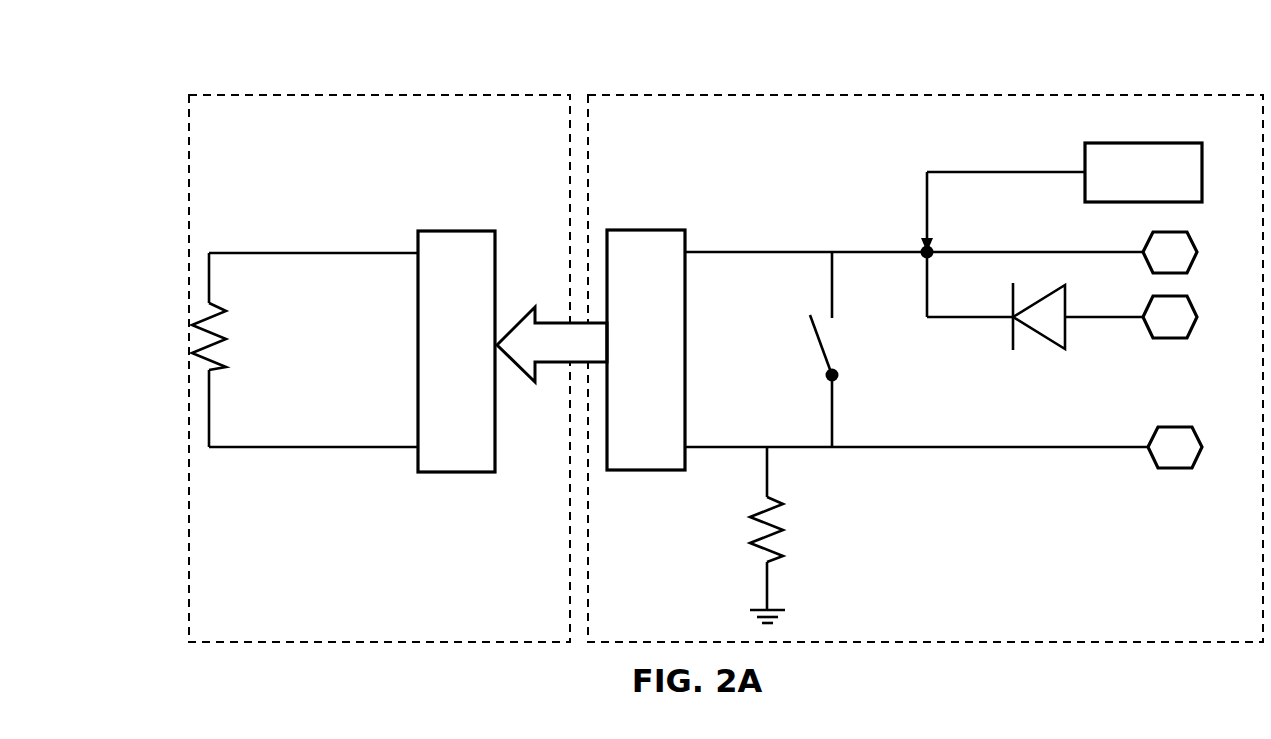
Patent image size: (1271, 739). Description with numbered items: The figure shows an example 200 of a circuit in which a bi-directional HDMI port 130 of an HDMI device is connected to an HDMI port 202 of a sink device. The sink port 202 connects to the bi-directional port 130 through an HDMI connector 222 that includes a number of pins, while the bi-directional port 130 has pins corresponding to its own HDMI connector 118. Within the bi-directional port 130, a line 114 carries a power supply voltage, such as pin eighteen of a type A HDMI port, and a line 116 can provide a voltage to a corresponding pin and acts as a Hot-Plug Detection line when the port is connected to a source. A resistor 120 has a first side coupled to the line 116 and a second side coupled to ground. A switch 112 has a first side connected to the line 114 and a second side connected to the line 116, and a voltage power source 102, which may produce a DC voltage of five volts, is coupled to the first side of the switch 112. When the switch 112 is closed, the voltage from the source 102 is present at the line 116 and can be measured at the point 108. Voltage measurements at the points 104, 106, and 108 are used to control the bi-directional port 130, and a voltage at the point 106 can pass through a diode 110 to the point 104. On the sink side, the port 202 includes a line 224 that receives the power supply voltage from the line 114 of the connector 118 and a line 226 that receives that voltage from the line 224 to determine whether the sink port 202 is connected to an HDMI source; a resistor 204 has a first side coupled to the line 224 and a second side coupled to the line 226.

The circuit example 200 is at (763, 70).
The HDMI port of a sink device 202 is at (212, 94).
The bi-directional HDMI port 130 is at (610, 94).
The HDMI connector 222 is at (496, 243).
The line 224 is at (228, 252).
The line 226 is at (224, 446).
The resistor 204 is at (218, 352).
The HDMI connector 118 is at (687, 248).
The line 114 is at (790, 251).
The line 116 is at (870, 446).
The switch 112 is at (845, 356).
The voltage power source 102 is at (1203, 171).
The diode 110 is at (1010, 330).
The point 104 is at (1170, 252).
The point 106 is at (1170, 317).
The point 108 is at (1175, 447).
The resistor 120 is at (775, 540).